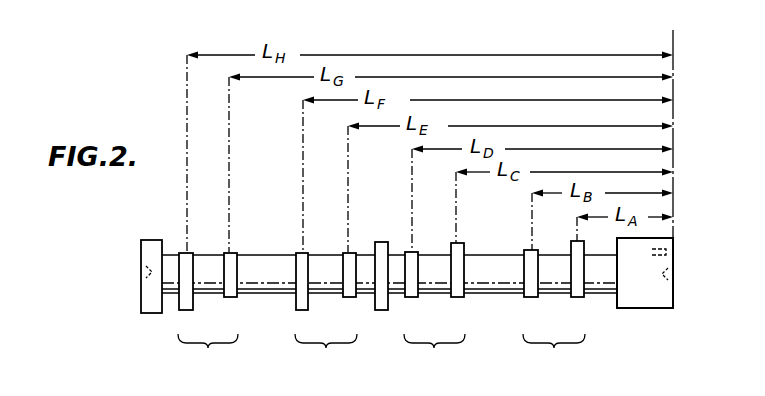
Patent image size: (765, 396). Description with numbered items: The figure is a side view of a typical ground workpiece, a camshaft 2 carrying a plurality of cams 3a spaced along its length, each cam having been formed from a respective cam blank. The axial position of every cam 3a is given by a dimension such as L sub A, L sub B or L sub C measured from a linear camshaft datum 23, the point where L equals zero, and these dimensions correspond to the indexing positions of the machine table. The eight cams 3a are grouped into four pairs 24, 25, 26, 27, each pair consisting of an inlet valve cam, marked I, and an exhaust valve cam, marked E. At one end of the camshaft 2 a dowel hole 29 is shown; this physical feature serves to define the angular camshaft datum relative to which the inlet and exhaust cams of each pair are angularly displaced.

The camshaft 2 is at (263, 256).
The cams 3a is at (224, 253).
The linear camshaft datum 23 is at (675, 48).
The pair of cams 24 is at (554, 308).
The pair of cams 25 is at (434, 309).
The pair of cams 26 is at (326, 314).
The pair of cams 27 is at (208, 314).
The dowel hole 29 is at (678, 244).